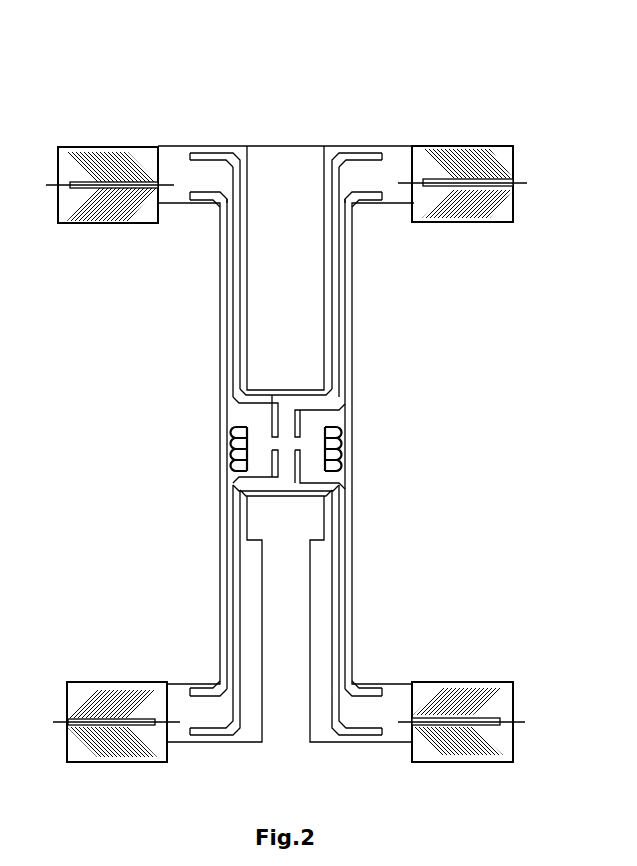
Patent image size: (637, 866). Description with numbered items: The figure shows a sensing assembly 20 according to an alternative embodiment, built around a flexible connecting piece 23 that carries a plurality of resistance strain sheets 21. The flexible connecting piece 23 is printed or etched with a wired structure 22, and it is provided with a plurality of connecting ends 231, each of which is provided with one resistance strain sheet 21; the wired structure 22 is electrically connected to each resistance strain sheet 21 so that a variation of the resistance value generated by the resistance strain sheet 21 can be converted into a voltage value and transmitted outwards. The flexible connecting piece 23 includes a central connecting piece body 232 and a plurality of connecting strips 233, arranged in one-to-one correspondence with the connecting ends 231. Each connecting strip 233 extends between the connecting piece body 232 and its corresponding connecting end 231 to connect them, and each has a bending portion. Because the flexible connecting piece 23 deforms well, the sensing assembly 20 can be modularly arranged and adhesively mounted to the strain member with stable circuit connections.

The sensing assembly 20 is at (146, 425).
The resistance strain sheet 21 is at (108, 207).
The wired structure 22 is at (297, 454).
The flexible connecting piece 23 is at (348, 353).
The connecting end 231 is at (177, 158).
The connecting piece body 232 is at (317, 473).
The connecting strip 233 is at (248, 268).